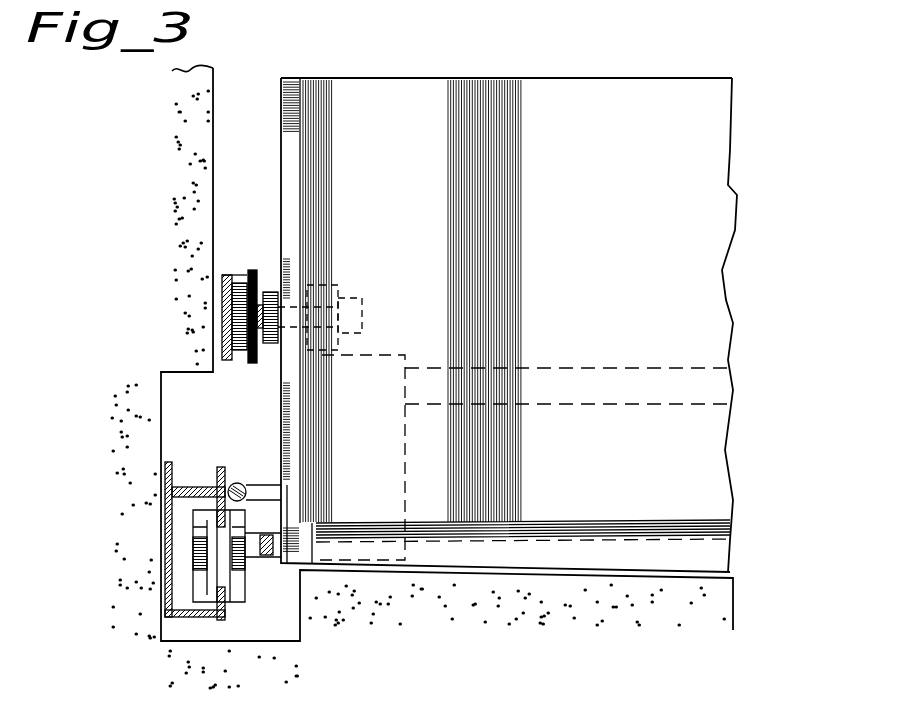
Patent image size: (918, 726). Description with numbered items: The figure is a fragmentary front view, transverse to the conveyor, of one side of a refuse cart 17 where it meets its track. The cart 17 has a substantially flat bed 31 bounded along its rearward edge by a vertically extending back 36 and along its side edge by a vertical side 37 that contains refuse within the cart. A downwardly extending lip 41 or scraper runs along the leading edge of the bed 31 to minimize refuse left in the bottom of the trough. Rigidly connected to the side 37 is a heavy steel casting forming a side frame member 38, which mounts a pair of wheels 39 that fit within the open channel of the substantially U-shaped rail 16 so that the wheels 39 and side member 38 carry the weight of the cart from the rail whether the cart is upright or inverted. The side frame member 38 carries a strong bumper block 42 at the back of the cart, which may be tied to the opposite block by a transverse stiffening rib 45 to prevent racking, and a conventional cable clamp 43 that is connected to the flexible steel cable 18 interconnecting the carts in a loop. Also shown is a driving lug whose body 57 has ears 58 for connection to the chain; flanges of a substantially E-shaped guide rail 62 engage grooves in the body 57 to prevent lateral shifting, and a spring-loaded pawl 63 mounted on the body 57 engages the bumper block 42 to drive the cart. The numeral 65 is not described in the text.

The cart 17 is at (617, 72).
The back 36 is at (737, 193).
The side 37 is at (302, 142).
The side frame member 38 is at (283, 403).
The transverse stiffening rib 45 is at (565, 368).
The bumper block 42 is at (408, 470).
The bed 31 is at (540, 522).
The lip 41 is at (603, 552).
The rail 16 is at (231, 274).
The wheel 39 is at (225, 312).
The cable clamp 43 is at (233, 487).
The flexible steel cable 18 is at (238, 484).
The pawl 63 is at (259, 540).
The ear 58 is at (193, 555).
The guide rail 62 is at (172, 617).
The body 57 is at (236, 600).
The lock bolt 65 is at (225, 618).